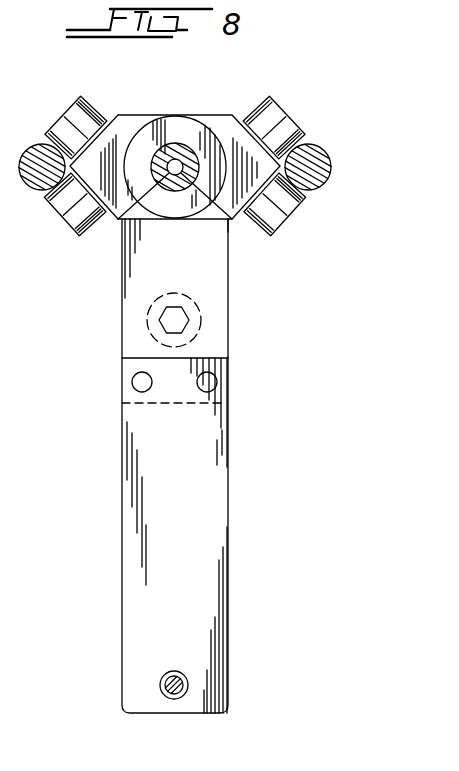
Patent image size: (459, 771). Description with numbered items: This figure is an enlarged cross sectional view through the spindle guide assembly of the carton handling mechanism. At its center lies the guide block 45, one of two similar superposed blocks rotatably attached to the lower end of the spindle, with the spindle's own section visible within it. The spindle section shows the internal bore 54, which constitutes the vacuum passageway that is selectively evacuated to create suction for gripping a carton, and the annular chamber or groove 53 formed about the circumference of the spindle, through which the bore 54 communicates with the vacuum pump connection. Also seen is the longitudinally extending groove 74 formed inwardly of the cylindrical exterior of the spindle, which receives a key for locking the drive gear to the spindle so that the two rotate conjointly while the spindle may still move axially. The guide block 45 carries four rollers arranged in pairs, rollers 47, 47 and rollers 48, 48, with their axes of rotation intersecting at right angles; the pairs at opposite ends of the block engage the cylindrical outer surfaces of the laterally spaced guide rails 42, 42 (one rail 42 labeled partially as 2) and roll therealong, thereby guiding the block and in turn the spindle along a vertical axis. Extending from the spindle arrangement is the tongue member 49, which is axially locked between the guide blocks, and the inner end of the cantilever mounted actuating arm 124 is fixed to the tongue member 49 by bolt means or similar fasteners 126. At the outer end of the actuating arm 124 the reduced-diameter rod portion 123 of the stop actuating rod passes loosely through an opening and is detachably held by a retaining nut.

The ball follower (partial numeral 42) 2 is at (28, 158).
The guide rail 42 is at (327, 175).
The guide block 45 is at (128, 130).
The rollers 47 is at (74, 118).
The rollers 48 is at (285, 138).
The tongue member 49 is at (223, 330).
The annular chamber or groove 53 is at (177, 192).
The internal bore 54 is at (231, 221).
The longitudinally extending groove 74 is at (118, 219).
The rod portion 123 is at (185, 682).
The actuating arm 124 is at (218, 542).
The bolt means or fasteners 126 is at (132, 384).